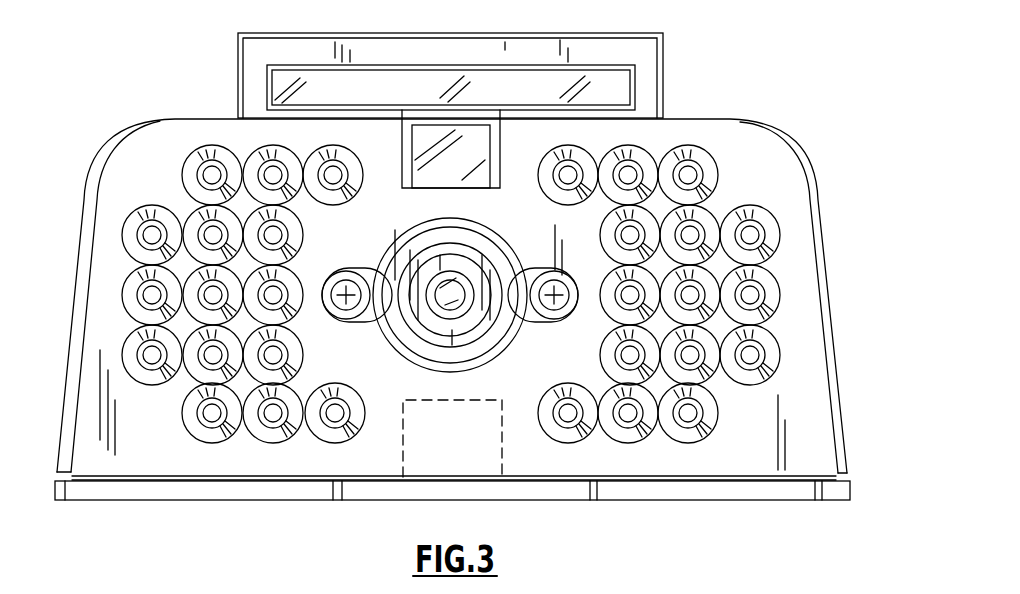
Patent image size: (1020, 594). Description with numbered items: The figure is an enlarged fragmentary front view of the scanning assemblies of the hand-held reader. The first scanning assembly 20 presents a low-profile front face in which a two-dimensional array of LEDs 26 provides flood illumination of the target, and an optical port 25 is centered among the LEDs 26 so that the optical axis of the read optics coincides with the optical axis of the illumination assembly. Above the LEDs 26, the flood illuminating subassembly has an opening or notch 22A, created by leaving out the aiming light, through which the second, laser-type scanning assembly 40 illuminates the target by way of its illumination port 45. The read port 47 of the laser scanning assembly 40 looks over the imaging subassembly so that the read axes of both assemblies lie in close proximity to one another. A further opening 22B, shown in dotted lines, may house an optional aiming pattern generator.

The first scanning assembly 20 is at (805, 148).
The second scanning assembly 40 is at (668, 60).
The read port 47 is at (287, 90).
The opening or notch 22A is at (393, 153).
The optical illumination port 45 is at (462, 143).
The optical port 25 is at (460, 260).
The LEDs 26 is at (140, 345).
The further opening 22B is at (502, 445).